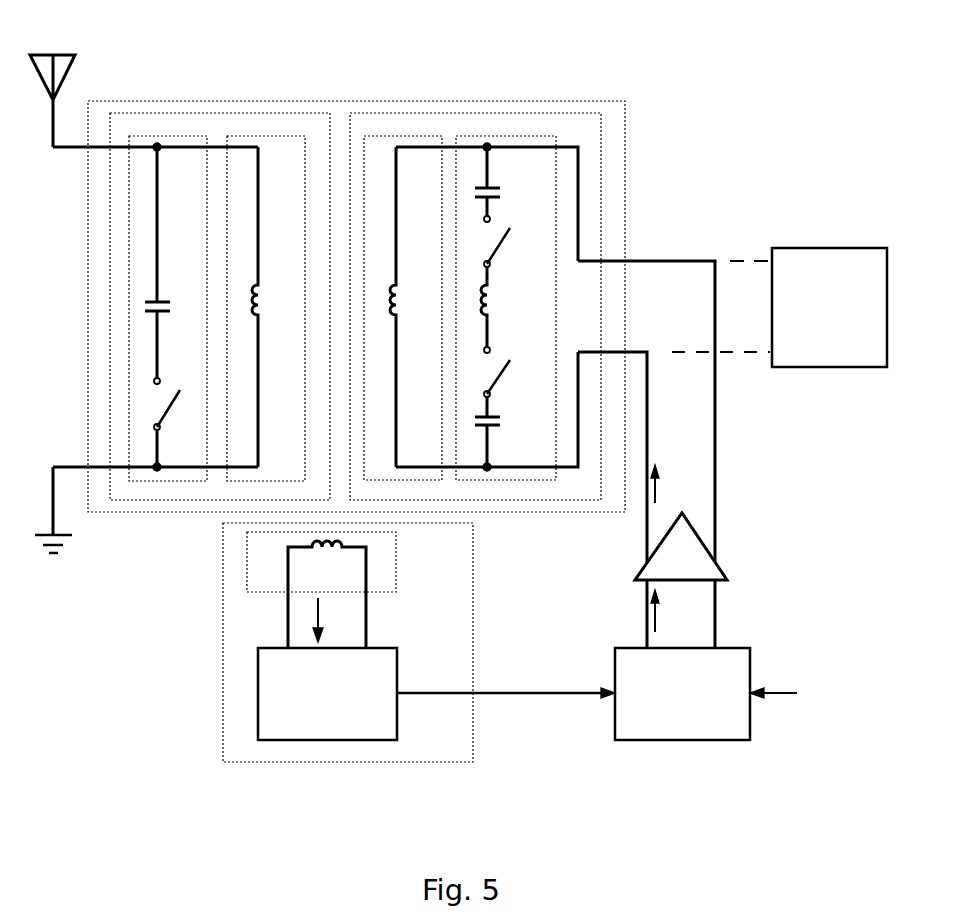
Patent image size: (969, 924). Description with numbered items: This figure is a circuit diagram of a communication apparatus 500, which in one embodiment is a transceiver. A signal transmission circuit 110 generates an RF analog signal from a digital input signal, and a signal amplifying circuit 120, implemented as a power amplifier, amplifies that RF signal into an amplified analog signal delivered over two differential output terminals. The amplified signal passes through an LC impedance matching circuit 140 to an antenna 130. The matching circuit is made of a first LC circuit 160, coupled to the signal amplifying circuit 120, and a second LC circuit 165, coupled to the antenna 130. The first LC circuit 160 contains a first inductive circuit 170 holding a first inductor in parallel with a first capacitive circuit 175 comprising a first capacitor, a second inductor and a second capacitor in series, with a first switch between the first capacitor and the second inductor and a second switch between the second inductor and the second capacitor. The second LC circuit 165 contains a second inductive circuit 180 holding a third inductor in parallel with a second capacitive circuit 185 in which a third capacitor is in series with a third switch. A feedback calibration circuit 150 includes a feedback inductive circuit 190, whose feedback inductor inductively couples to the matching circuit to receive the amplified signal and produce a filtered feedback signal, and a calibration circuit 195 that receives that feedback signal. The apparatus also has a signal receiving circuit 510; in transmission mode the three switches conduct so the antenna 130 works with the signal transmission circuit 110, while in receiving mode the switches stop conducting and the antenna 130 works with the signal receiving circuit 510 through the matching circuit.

The signal transmission circuit 110 is at (750, 664).
The signal amplifying circuit 120 is at (727, 574).
The antenna 130 is at (70, 62).
The LC impedance matching circuit 140 is at (625, 138).
The feedback calibration circuit 150 is at (223, 730).
The first LC circuit 160 is at (391, 113).
The second LC circuit 165 is at (150, 113).
The first inductive circuit 170 is at (430, 136).
The first capacitive circuit 175 is at (528, 136).
The second inductive circuit 180 is at (277, 136).
The second capacitive circuit 185 is at (178, 136).
The feedback inductive circuit 190 is at (396, 562).
The calibration circuit 195 is at (397, 680).
The communication apparatus 500 is at (757, 49).
The signal receiving circuit 510 is at (887, 270).